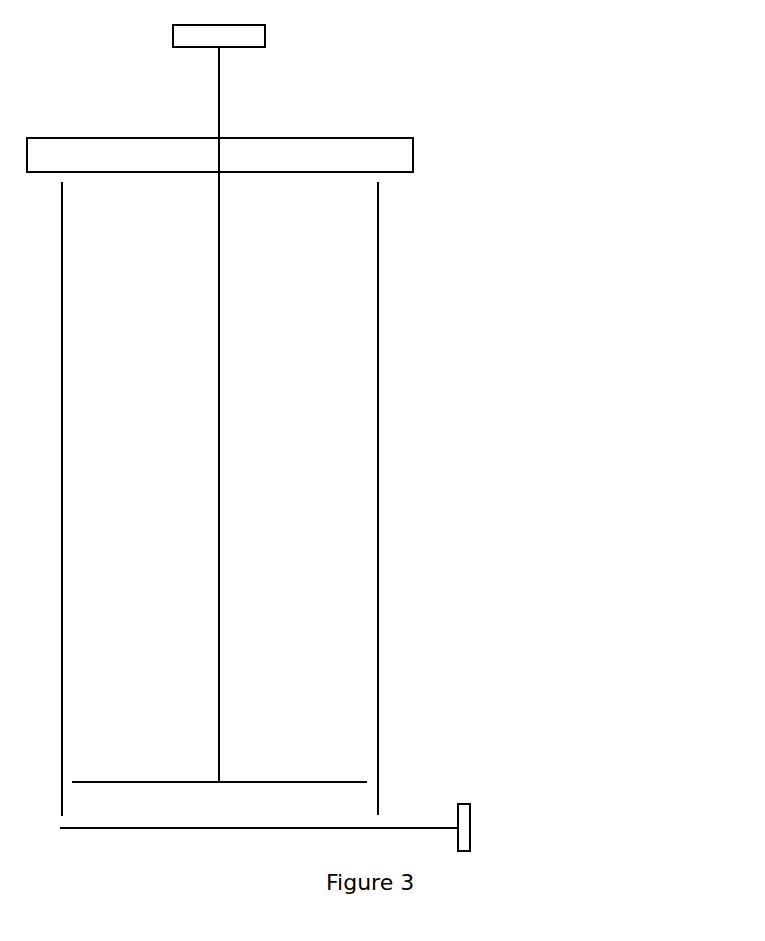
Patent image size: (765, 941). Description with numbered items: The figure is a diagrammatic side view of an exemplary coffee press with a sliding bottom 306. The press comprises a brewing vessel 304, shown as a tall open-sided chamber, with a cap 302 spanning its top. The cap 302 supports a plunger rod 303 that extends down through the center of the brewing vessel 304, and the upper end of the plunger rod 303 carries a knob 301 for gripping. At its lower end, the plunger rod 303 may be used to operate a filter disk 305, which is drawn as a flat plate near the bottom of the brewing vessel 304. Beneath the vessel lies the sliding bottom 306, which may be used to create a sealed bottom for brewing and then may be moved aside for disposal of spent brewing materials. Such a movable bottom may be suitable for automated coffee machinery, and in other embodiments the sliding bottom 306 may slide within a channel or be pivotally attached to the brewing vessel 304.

The knob 301 is at (266, 37).
The cap 302 is at (309, 138).
The plunger rod 303 is at (219, 397).
The brewing vessel 304 is at (378, 521).
The filter disk 305 is at (280, 781).
The sliding bottom 306 is at (471, 813).